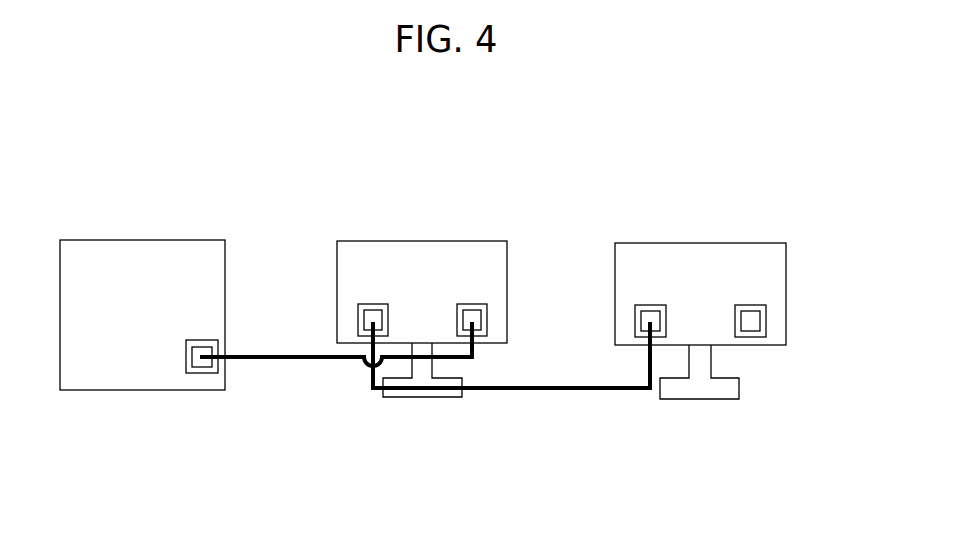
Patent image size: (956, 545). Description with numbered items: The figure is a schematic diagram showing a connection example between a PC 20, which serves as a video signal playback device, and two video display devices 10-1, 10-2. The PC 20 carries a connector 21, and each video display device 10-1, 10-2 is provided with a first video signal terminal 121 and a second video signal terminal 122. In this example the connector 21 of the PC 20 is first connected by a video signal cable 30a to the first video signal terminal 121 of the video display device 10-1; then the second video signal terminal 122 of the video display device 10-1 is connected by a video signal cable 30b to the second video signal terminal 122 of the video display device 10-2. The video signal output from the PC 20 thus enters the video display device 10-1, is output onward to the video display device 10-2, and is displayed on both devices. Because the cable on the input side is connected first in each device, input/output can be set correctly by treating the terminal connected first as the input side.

The PC 20 is at (150, 240).
The connector 21 is at (205, 340).
The video display device 10-1 is at (423, 241).
The video display device 10-2 is at (700, 243).
The video signal terminal (1) 121 is at (487, 322).
The video signal terminal (2) 122 is at (358, 320).
The video signal cable 30a is at (282, 362).
The video signal cable 30b is at (557, 392).